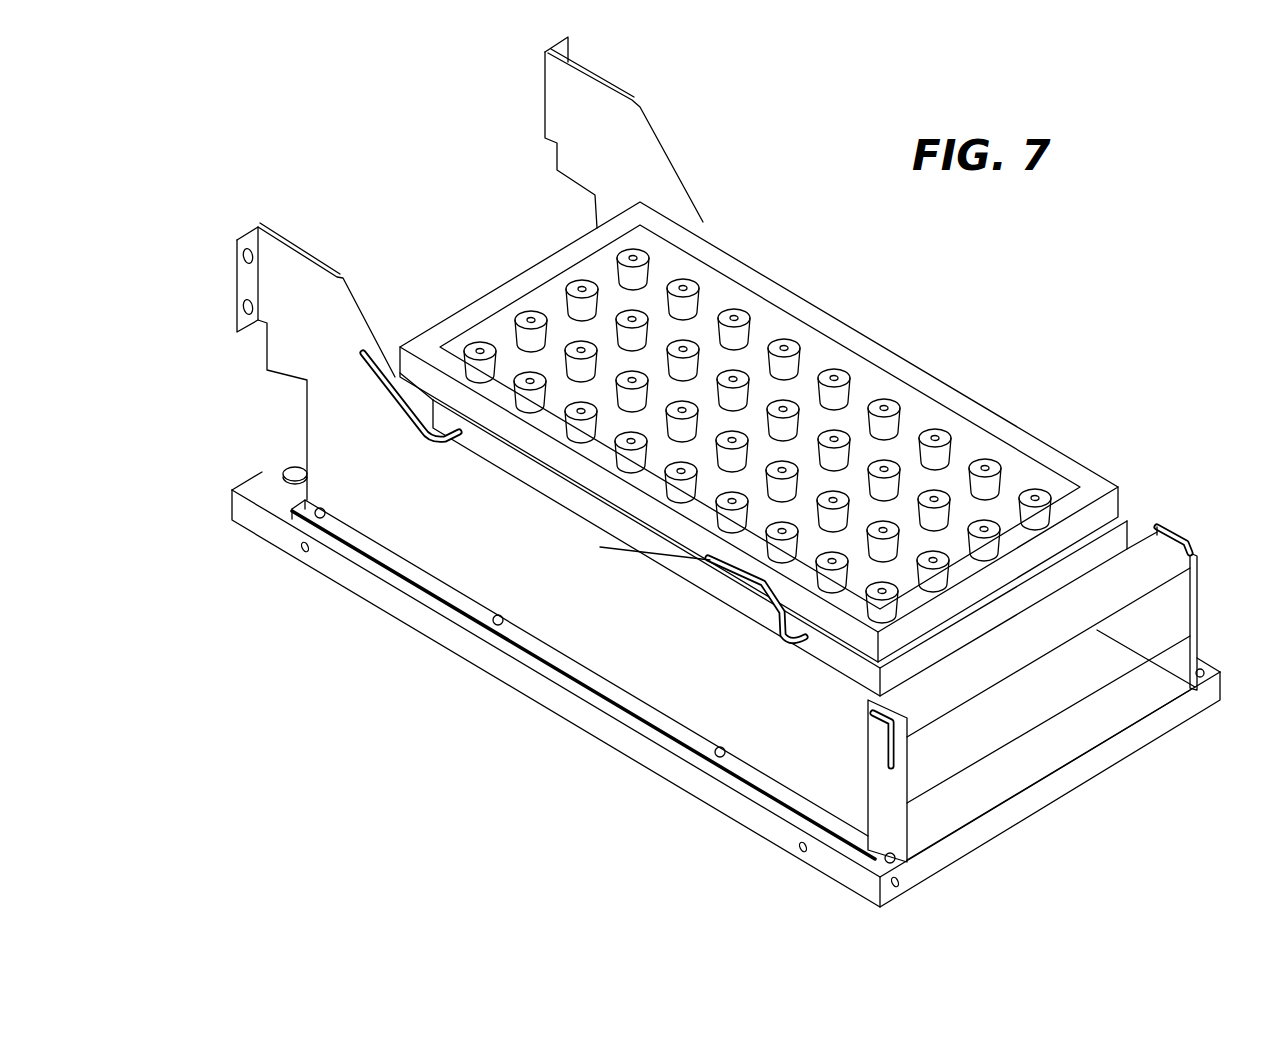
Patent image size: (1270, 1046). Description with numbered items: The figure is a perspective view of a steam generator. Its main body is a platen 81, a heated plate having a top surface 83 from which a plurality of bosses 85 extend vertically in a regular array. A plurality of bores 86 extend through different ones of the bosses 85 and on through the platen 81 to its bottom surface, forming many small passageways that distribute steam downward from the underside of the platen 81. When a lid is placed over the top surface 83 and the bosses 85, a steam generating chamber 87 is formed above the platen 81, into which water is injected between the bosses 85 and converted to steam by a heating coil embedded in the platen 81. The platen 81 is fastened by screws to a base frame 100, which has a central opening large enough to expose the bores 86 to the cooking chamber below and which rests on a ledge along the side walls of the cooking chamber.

The platen 81 is at (1123, 512).
The top surface 83 is at (702, 335).
The bosses 85 is at (845, 378).
The bores 86 is at (836, 378).
The steam generating chamber 87 is at (612, 302).
The base frame 100 is at (1142, 555).